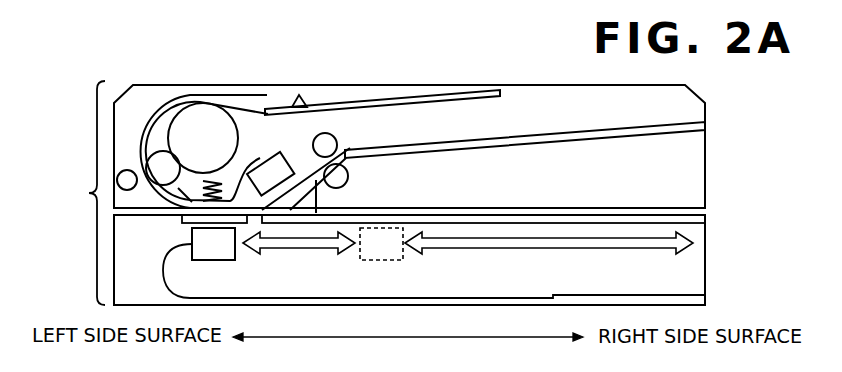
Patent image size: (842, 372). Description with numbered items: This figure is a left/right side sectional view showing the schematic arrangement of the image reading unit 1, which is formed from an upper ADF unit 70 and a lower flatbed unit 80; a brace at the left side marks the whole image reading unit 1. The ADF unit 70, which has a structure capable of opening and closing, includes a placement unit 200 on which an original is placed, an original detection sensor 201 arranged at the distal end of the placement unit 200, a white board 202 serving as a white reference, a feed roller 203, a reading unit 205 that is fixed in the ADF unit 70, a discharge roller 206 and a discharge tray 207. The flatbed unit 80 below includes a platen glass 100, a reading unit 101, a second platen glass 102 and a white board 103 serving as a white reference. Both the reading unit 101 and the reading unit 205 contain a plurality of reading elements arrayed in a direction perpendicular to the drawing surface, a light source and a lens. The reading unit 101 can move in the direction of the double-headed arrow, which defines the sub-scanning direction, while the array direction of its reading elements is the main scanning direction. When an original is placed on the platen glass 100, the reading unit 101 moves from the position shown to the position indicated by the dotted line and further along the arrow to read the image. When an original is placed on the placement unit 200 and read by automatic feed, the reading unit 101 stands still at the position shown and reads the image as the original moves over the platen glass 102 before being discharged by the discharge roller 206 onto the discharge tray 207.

The image reading unit 1 is at (91, 193).
The ADF unit 70 is at (705, 165).
The flatbed unit 80 is at (705, 271).
The platen glass 100 is at (527, 215).
The reading unit 101 is at (237, 254).
The platen glass 102 is at (183, 224).
The white board 103 is at (321, 196).
The placement unit 200 is at (425, 96).
The original detection sensor 201 is at (300, 95).
The white board 202 is at (268, 165).
The feed roller 203 is at (182, 156).
The reading unit 205 is at (288, 153).
The discharge roller 206 is at (338, 139).
The discharge tray 207 is at (566, 134).